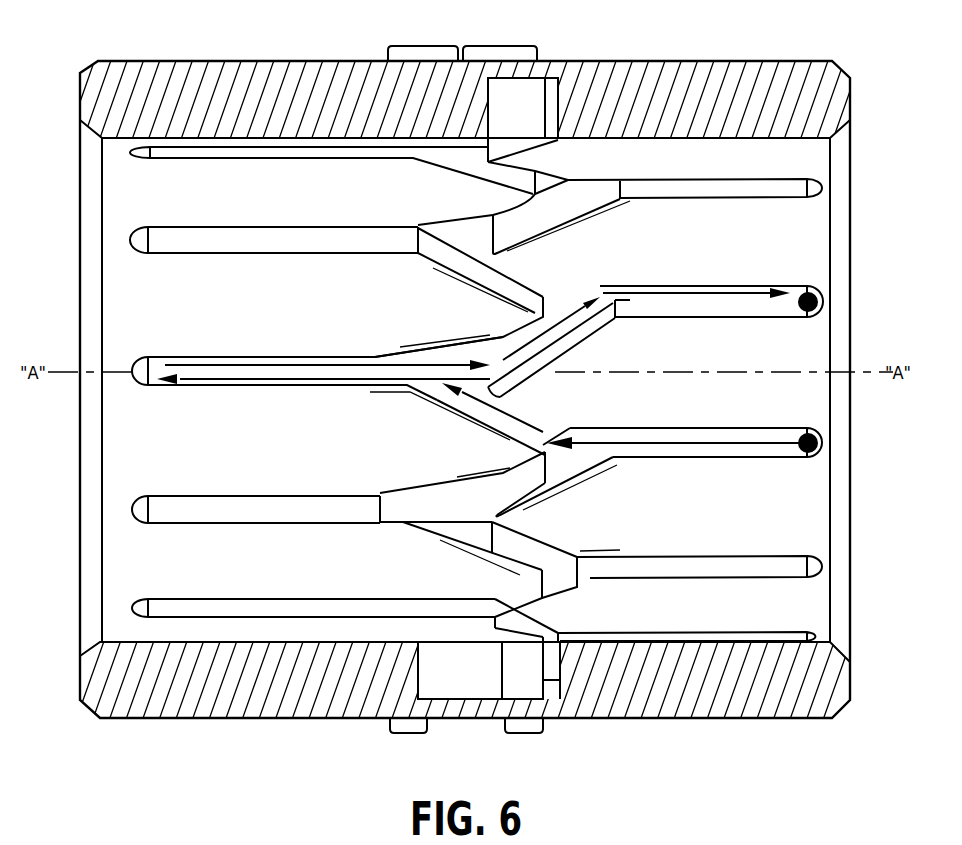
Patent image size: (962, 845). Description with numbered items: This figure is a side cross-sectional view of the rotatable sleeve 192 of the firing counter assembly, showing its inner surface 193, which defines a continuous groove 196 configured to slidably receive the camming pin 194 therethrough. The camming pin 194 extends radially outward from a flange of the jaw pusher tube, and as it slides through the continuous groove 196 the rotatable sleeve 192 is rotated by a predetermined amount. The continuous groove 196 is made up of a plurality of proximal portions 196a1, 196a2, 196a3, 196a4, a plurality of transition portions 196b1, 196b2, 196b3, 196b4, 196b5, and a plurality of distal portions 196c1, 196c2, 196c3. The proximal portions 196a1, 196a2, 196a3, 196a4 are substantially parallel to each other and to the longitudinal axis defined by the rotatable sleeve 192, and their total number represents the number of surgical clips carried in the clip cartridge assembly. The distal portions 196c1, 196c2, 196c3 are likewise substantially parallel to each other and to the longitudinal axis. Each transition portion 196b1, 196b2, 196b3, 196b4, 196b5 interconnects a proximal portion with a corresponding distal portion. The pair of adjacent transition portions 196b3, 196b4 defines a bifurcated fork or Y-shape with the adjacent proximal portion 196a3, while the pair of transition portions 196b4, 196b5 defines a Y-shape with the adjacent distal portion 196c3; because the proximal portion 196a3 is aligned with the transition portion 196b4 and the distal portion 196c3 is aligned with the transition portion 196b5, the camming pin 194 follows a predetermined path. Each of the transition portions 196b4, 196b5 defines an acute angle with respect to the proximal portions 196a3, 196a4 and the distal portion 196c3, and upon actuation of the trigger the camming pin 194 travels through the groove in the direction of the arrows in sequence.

The rotatable sleeve 192 is at (772, 90).
The inner surface 193 is at (817, 162).
The camming pin 194 is at (809, 432).
The continuous groove 196 is at (261, 155).
The proximal portion 196a1 is at (822, 636).
The proximal portion 196a2 is at (822, 567).
The proximal portion 196a3 is at (817, 452).
The proximal portion 196a4 is at (816, 305).
The transition portion 196b1 is at (548, 626).
The transition portion 196b2 is at (547, 537).
The transition portion 196b3 is at (513, 463).
The transition portion 196b4 is at (448, 403).
The transition portion 196b5 is at (420, 343).
The distal portion 196c1 is at (137, 607).
The distal portion 196c2 is at (133, 505).
The distal portion 196c3 is at (134, 370).